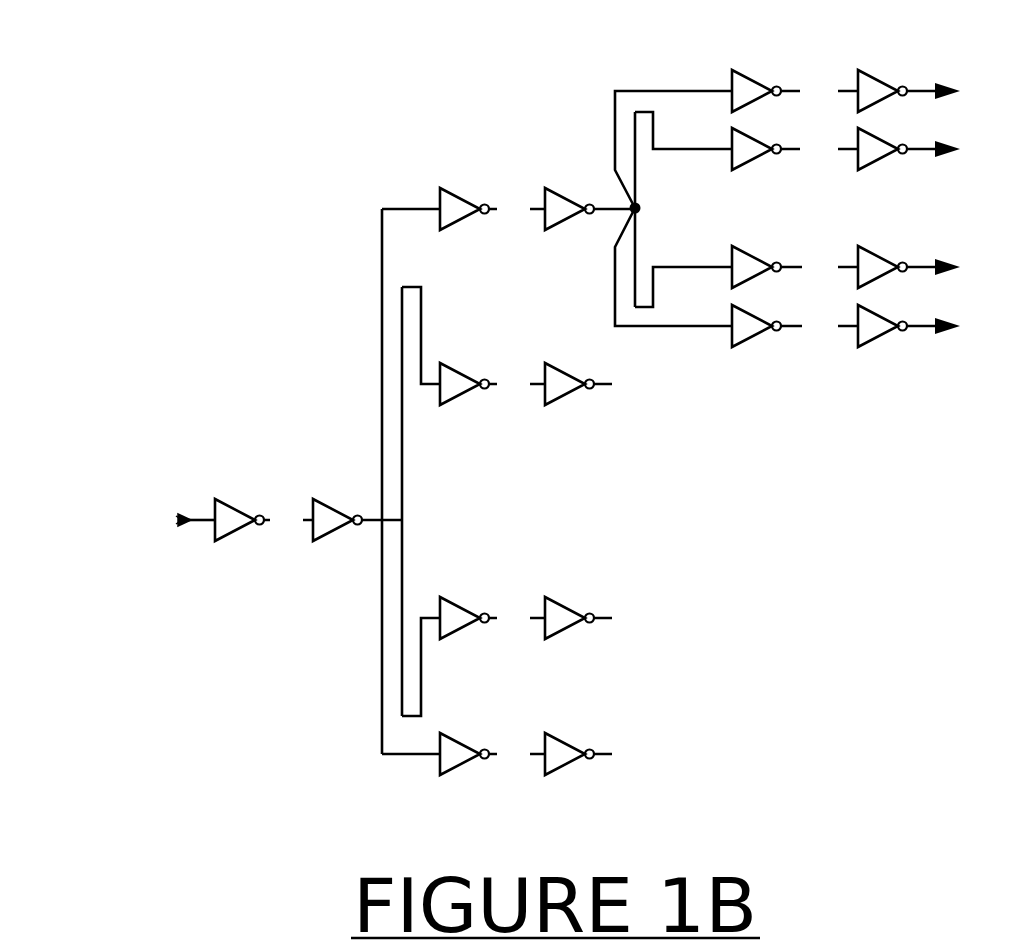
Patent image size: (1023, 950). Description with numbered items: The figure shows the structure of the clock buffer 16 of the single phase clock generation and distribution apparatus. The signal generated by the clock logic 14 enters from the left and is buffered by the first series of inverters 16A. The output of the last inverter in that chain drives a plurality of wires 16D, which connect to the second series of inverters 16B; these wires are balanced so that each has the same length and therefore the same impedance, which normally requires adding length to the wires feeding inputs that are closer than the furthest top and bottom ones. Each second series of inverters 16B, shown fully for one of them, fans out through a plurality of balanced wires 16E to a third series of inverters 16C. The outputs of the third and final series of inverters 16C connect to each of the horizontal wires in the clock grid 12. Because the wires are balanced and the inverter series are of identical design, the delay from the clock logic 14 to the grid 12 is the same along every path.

The clock grid 12 is at (956, 209).
The clock logic 14 is at (134, 521).
The clock buffer 16 is at (422, 133).
The first series of inverters 16A is at (288, 499).
The second series of inverters 16B is at (643, 463).
The third series of inverters 16C is at (819, 192).
The wires 16D is at (402, 482).
The wires 16E is at (637, 162).